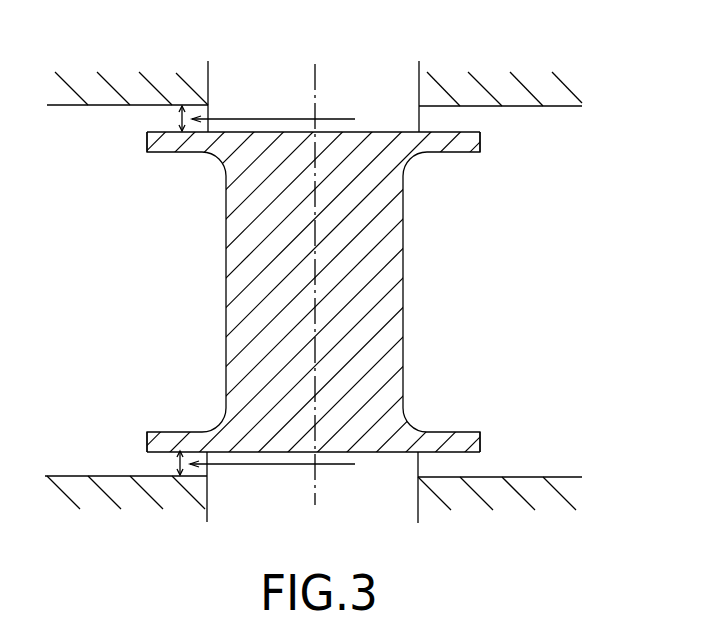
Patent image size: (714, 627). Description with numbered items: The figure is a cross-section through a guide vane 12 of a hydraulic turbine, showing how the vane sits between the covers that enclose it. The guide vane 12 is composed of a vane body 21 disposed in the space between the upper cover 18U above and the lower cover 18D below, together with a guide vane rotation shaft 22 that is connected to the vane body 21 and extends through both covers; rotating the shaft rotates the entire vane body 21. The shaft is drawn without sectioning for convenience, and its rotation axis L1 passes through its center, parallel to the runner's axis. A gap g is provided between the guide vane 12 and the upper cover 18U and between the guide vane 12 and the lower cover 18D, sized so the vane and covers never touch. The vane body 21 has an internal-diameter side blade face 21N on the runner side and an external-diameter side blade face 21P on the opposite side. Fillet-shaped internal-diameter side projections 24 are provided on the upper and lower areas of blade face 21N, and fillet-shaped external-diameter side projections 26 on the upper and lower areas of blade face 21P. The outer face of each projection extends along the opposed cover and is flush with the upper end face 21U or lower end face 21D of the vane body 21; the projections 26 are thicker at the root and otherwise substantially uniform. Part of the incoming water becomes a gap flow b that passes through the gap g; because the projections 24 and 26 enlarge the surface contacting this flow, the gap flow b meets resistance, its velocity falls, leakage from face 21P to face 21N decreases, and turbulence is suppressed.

The guide vane 12 is at (529, 317).
The upper cover 18U is at (127, 88).
The lower cover 18D is at (138, 502).
The vane body 21 is at (357, 303).
The upper end face 21U is at (367, 132).
The lower end face 21D is at (368, 452).
The internal-diameter side blade face 21N is at (226, 265).
The external-diameter side blade face 21P is at (403, 235).
The guide vane rotation shaft 22 is at (412, 76).
The internal-diameter side projection 24 is at (148, 143).
The external-diameter side projection 26 is at (480, 143).
The rotation axis L1 is at (317, 72).
The gap flow b is at (262, 540).
The gap g is at (184, 117).